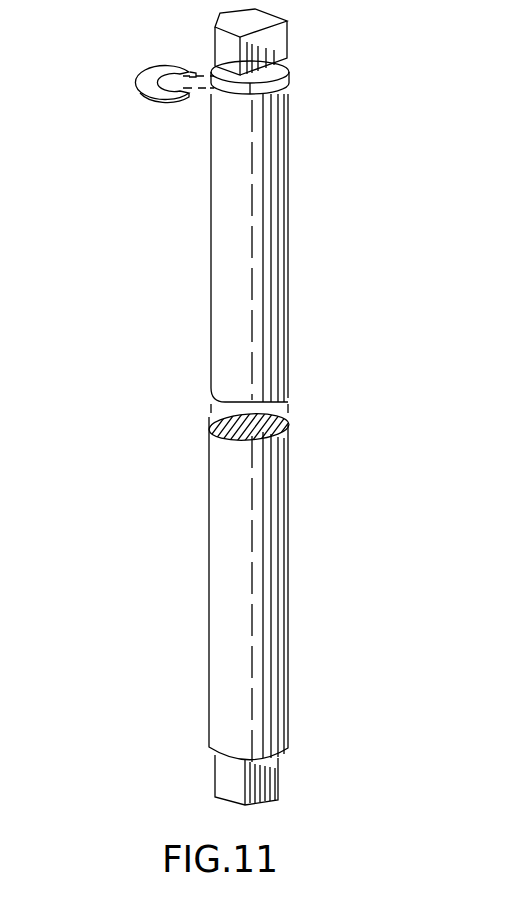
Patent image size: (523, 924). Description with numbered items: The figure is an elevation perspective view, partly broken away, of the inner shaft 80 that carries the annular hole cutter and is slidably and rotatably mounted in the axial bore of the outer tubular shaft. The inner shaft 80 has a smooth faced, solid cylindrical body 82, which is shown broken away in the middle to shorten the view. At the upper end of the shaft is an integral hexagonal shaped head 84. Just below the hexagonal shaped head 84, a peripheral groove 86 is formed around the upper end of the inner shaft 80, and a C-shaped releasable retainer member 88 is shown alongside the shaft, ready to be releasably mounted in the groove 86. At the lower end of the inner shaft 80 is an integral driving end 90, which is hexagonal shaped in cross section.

The inner shaft 80 is at (208, 333).
The solid cylindrical body 82 is at (215, 455).
The hexagonal shaped head 84 is at (268, 50).
The peripheral groove 86 is at (280, 88).
The C-shaped releasable retainer member 88 is at (135, 80).
The driving end 90 is at (268, 778).